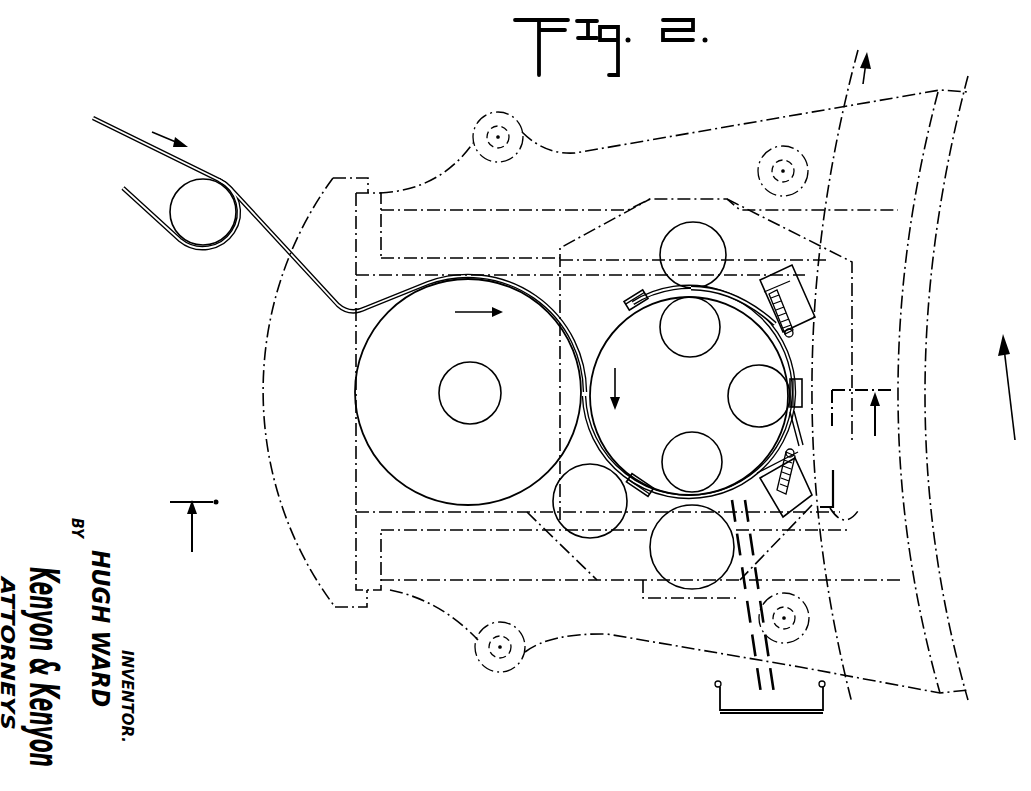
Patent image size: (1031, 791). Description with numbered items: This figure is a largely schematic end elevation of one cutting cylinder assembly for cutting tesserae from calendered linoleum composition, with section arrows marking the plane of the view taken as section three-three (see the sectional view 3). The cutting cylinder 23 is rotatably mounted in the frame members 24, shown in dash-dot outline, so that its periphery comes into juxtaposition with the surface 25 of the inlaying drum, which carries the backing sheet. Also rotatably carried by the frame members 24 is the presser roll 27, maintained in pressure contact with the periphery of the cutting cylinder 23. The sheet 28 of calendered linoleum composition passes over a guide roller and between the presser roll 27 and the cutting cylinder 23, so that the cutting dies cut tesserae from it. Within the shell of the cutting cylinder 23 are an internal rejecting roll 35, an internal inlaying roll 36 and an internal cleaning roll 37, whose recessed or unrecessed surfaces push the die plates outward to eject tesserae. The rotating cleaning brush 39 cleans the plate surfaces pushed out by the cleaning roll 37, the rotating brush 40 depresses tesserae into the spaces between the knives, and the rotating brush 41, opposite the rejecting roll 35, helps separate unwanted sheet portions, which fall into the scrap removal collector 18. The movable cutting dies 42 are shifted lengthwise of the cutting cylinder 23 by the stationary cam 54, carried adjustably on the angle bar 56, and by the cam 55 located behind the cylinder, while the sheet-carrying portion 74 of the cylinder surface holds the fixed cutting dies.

The collector 18 is at (728, 711).
The cutting cylinder 23 is at (595, 408).
The frame members 24 is at (465, 171).
The surface of the inlaying drum 25 is at (850, 92).
The presser roll 27 is at (375, 415).
The sheet of calendered linoleum composition 28 is at (257, 220).
The internal rejecting roll 35 is at (684, 441).
The internal inlaying roll 36 is at (740, 389).
The internal cleaning roll 37 is at (706, 336).
The cleaning brush 39 is at (671, 233).
The rotating brush 40 is at (583, 529).
The rotating brush 41 is at (660, 558).
The movable cutting dies 42 is at (632, 297).
The cam 54 is at (820, 447).
The cam 55 is at (745, 296).
The angle bar 56 is at (820, 487).
The sheet-carrying portion of the cutting cylinder surface 74 is at (618, 324).
The section line 3- 3 is at (532, 471).